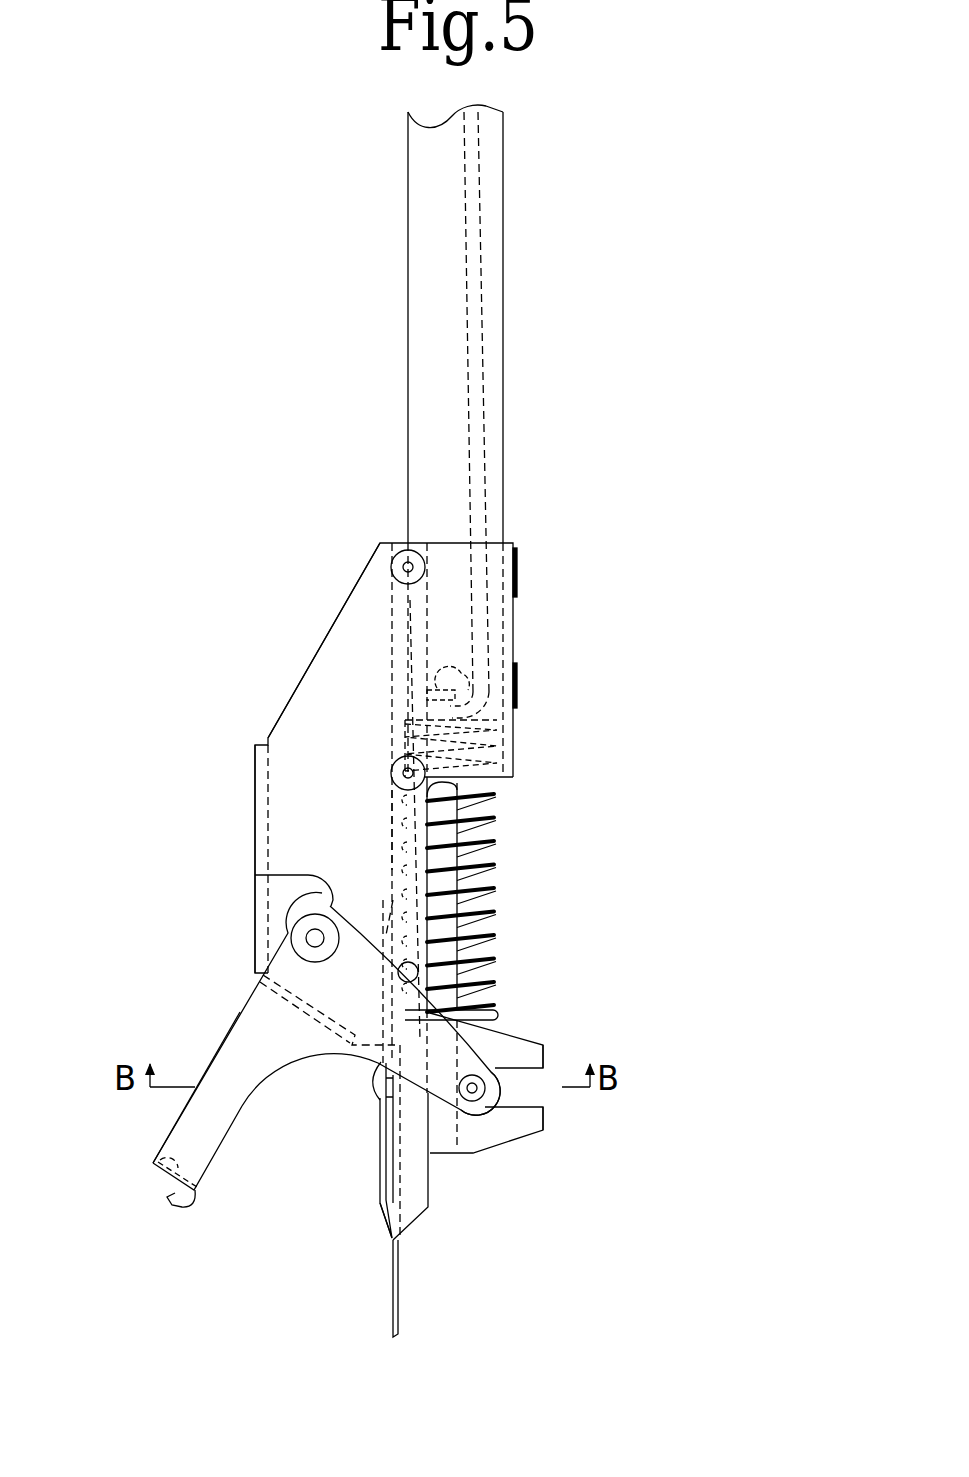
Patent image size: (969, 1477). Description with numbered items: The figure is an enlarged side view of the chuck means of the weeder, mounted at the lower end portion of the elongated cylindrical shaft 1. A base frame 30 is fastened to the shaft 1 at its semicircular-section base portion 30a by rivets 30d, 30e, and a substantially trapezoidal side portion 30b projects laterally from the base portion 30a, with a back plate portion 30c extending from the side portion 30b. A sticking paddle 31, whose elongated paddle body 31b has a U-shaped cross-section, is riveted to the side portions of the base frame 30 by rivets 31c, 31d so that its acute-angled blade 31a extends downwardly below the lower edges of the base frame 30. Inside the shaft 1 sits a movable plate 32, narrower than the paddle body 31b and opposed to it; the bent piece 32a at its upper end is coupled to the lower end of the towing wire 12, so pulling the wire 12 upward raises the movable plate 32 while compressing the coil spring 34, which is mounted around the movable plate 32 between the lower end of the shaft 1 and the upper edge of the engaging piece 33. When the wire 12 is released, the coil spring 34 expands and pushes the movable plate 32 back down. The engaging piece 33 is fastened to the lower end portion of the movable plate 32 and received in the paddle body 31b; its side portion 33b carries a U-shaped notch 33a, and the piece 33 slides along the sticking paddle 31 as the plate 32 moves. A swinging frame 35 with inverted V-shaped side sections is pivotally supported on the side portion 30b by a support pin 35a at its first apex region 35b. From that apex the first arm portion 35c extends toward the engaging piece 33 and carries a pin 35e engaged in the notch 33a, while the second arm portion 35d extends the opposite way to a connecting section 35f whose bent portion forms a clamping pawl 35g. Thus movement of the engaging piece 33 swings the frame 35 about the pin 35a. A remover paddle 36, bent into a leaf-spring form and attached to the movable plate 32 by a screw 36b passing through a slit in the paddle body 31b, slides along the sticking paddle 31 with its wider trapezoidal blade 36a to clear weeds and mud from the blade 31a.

The elongated cylindrical shaft 1 is at (390, 341).
The towing wire 12 is at (487, 340).
The base frame 30 is at (518, 632).
The base portion 30a is at (513, 761).
The side portion 30b is at (370, 585).
The back plate portion 30c is at (263, 817).
The rivet 30d is at (518, 567).
The rivet 30e is at (518, 690).
The sticking paddle 31 is at (390, 1284).
The blade 31a is at (400, 1298).
The paddle body 31b is at (390, 830).
The rivet 31c is at (403, 552).
The rivet 31d is at (396, 762).
The movable plate 32 is at (447, 834).
The bent piece 32a is at (435, 686).
The engaging piece 33 is at (506, 1144).
The notch 33a is at (545, 1105).
The side portion 33b is at (545, 1056).
The coil spring 34 is at (500, 910).
The swinging frame 35 is at (214, 1029).
The support pin 35a is at (300, 938).
The first apex region 35b is at (255, 875).
The first arm portion 35c is at (463, 1050).
The second arm portion 35d is at (186, 1110).
The pin 35e is at (480, 1099).
The connecting section 35f is at (160, 1143).
The clamping pawl 35g is at (165, 1208).
The remover paddle 36 is at (377, 1158).
The blade 36a is at (380, 1215).
The screw 36b is at (372, 1097).